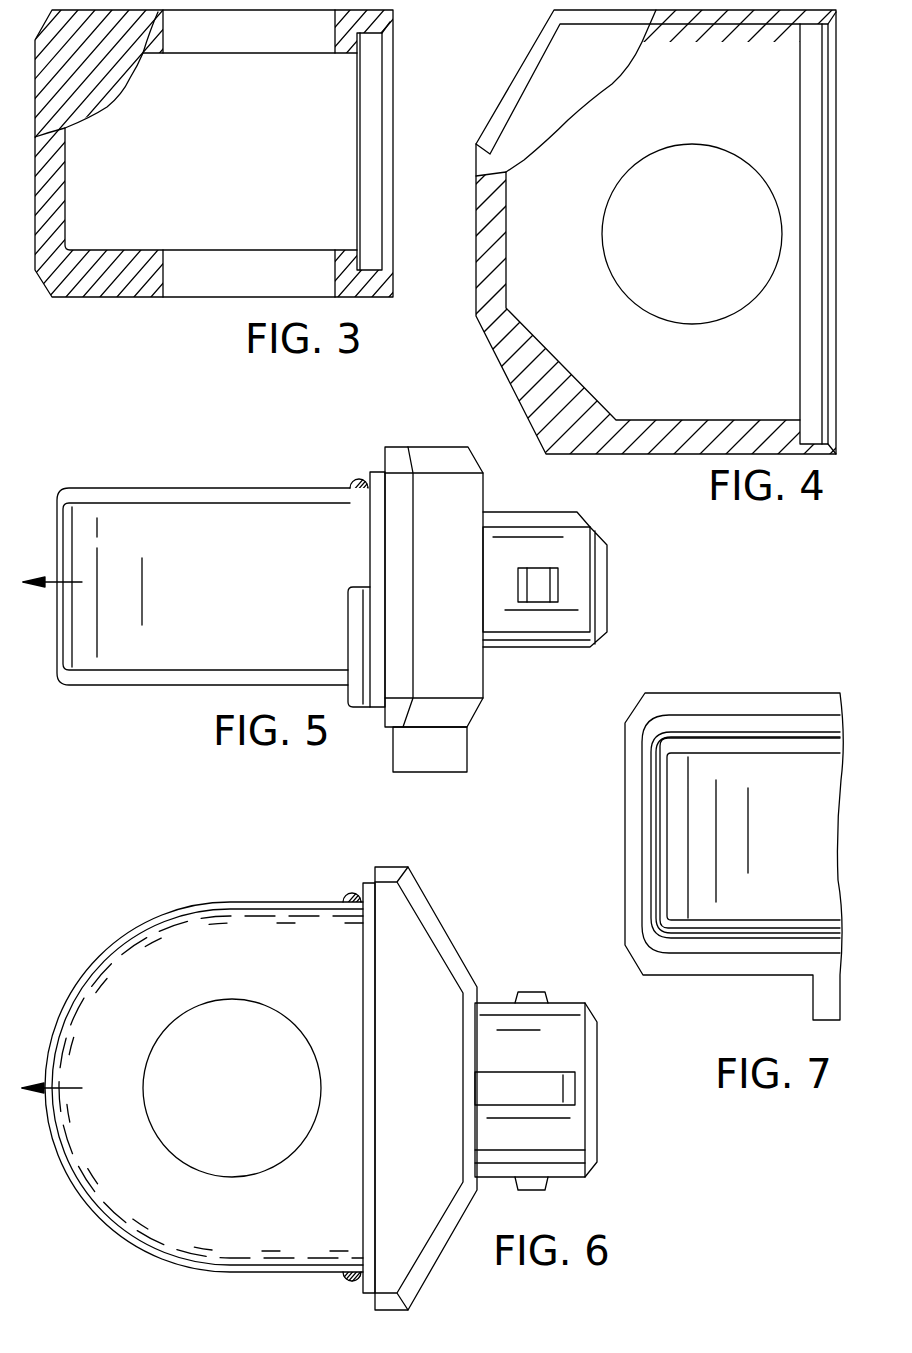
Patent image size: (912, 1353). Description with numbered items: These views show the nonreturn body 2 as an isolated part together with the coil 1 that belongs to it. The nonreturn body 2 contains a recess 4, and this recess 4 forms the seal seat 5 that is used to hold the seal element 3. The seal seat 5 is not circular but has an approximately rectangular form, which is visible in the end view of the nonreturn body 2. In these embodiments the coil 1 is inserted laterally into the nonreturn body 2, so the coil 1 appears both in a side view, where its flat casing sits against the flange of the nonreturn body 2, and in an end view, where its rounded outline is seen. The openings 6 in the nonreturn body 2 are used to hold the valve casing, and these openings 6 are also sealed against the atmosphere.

In FIG. 5, the coil 1 is at (167, 633).
In FIG. 6, the coil 1 is at (182, 952).
In FIG. 7, the coil 1 is at (750, 833).
In FIG. 3, the nonreturn body 2 is at (367, 17).
In FIG. 4, the nonreturn body 2 is at (465, 230).
In FIG. 7, the nonreturn body 2 is at (734, 856).
In FIG. 5, the seal element 3 is at (348, 479).
In FIG. 6, the seal element 3 is at (347, 890).
In FIG. 3, the recess 4 is at (360, 227).
In FIG. 4, the recess 4 is at (818, 233).
In FIG. 3, the seal seat 5 is at (370, 37).
In FIG. 7, the seal seat 5 is at (753, 938).
In FIG. 3, the openings 6 is at (163, 264).
In FIG. 4, the openings 6 is at (678, 302).
In FIG. 6, the openings 6 is at (165, 1060).